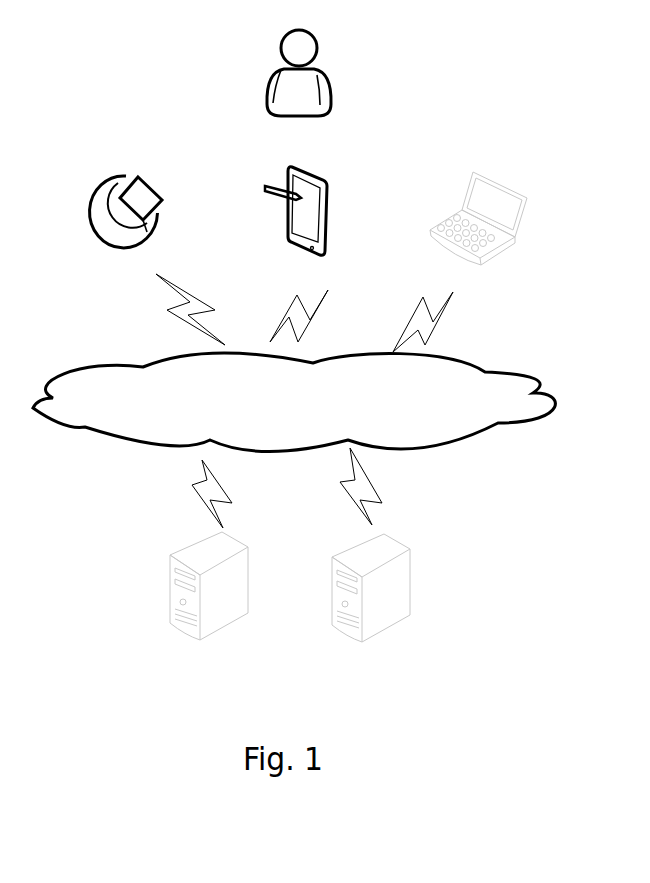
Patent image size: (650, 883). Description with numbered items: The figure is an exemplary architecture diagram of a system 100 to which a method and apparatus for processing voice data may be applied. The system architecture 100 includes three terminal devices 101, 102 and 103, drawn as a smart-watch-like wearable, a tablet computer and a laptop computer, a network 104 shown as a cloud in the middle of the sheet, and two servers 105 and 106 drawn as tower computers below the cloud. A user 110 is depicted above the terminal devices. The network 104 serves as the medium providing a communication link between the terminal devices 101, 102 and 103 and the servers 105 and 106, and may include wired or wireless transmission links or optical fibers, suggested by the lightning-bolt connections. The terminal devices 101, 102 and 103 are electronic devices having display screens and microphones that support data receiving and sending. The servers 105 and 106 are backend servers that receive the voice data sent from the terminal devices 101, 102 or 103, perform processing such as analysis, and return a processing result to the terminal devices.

The system architecture 100 is at (567, 23).
The terminal device 101 is at (126, 232).
The terminal device 102 is at (296, 227).
The terminal device 103 is at (478, 235).
The network 104 is at (294, 402).
The server 105 is at (209, 603).
The server 106 is at (371, 604).
The user 110 is at (299, 88).